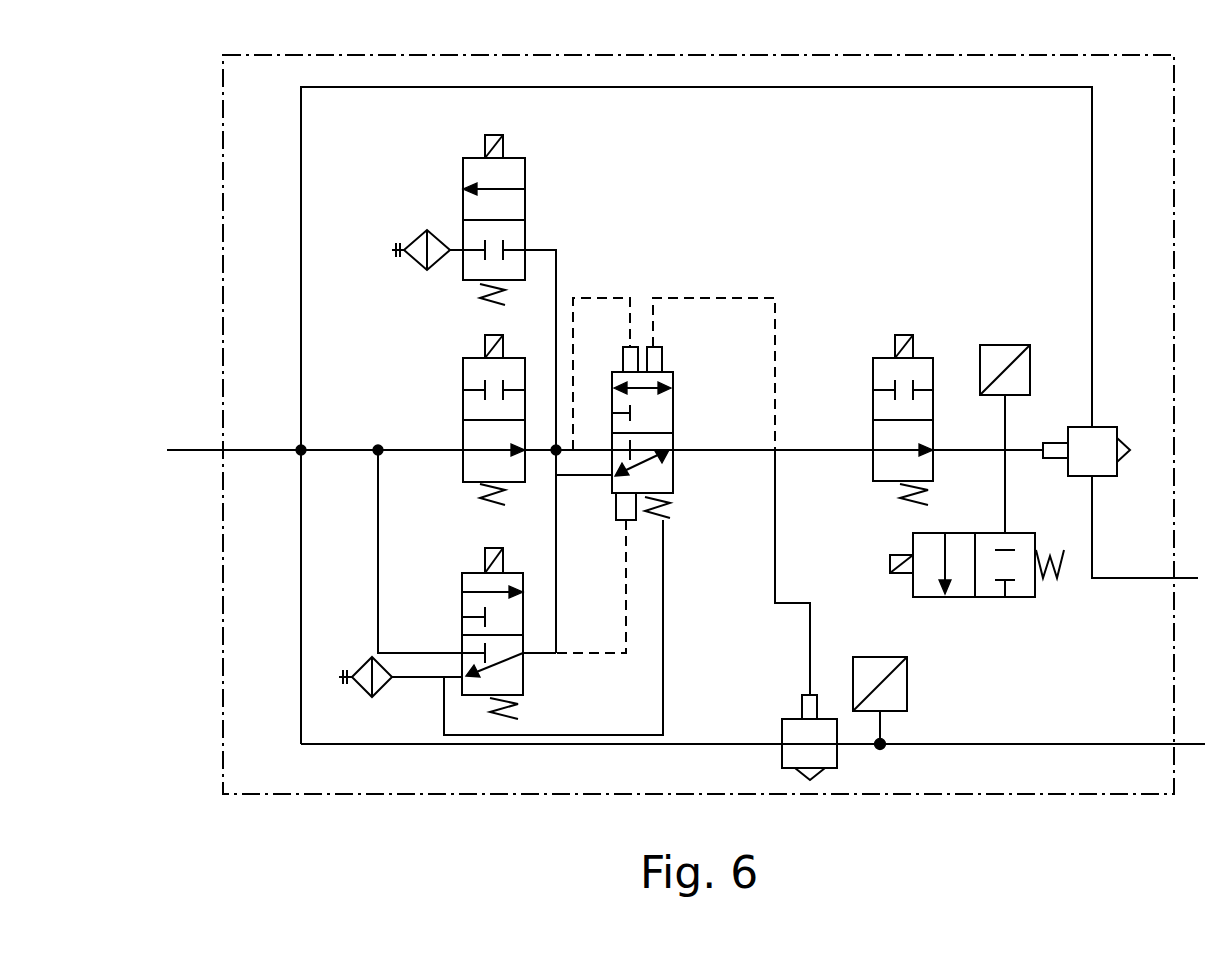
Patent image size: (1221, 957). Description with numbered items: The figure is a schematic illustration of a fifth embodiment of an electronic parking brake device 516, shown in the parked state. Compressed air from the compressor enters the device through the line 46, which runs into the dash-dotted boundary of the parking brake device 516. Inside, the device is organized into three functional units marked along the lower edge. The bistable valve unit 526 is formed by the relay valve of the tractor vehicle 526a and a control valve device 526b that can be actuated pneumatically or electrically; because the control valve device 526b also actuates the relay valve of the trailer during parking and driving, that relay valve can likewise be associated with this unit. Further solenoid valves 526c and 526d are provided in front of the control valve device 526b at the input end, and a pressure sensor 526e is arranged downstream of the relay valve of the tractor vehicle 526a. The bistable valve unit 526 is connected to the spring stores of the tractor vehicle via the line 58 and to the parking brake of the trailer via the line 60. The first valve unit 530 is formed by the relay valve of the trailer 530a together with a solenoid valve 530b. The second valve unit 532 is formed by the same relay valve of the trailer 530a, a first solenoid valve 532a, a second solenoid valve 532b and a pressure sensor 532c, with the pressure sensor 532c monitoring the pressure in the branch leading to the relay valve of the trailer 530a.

The electronic parking brake device 516 is at (1097, 47).
The line 46 is at (272, 450).
The bistable valve unit 526 is at (392, 832).
The first valve unit 530 is at (1042, 832).
The second valve unit 532 is at (1137, 832).
The line 58 is at (1115, 744).
The line 60 is at (1115, 578).
The relay valve of the tractor vehicle 526a is at (838, 762).
The control valve device 526b is at (668, 372).
The solenoid valve 526c is at (526, 198).
The solenoid valve 526d is at (463, 375).
The pressure sensor 526e is at (908, 700).
The relay valve of the trailer 530a is at (1098, 440).
The solenoid valve 530b is at (527, 668).
The first solenoid valve 532a is at (878, 356).
The second solenoid valve 532b is at (991, 598).
The pressure sensor 532c is at (1005, 345).